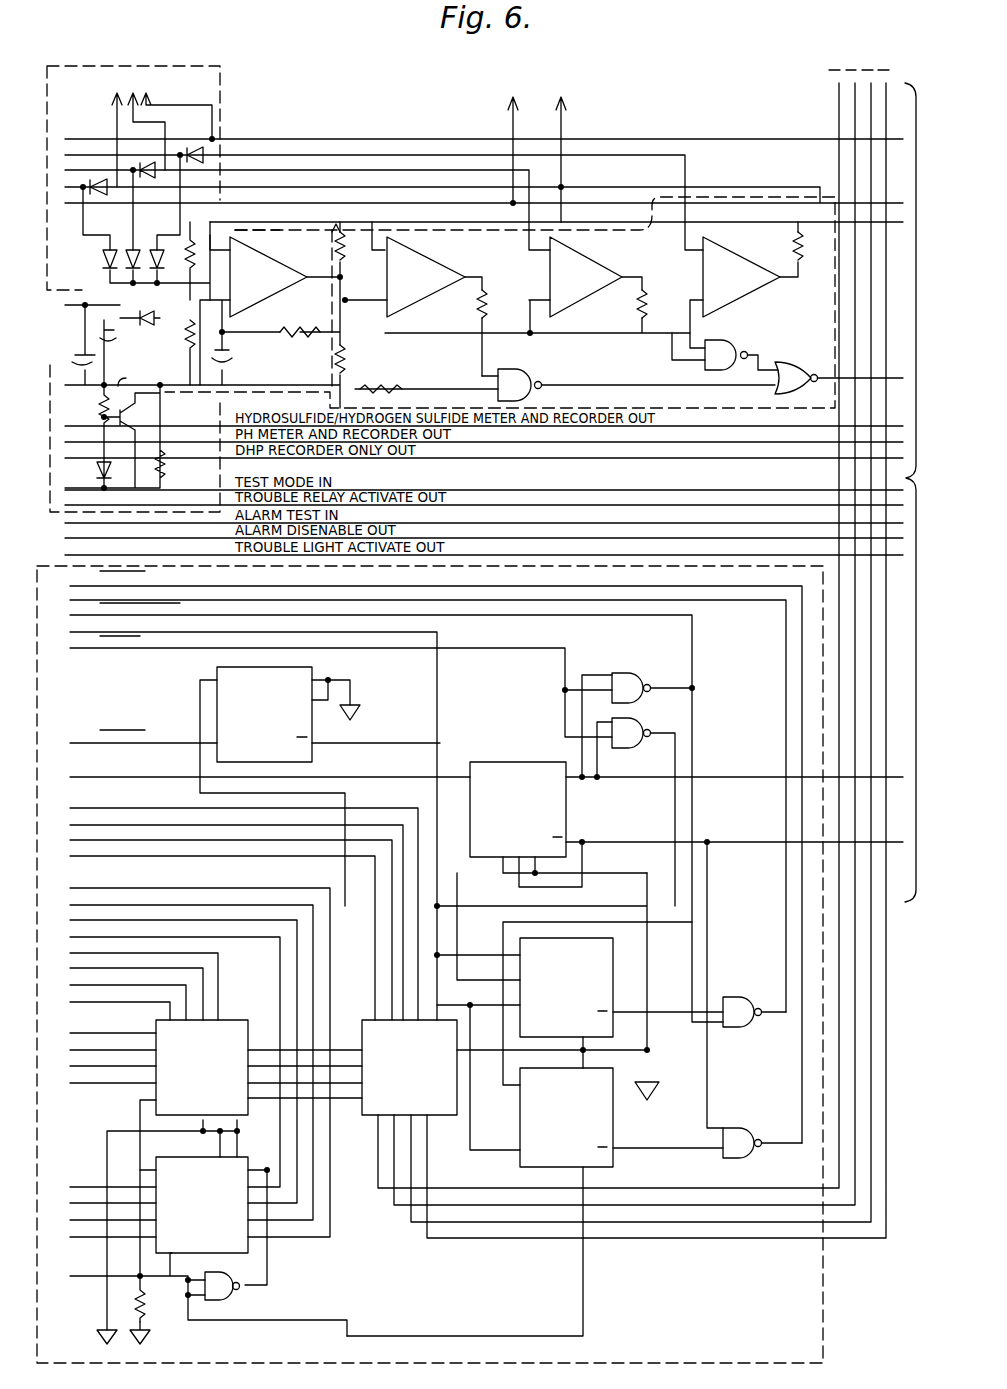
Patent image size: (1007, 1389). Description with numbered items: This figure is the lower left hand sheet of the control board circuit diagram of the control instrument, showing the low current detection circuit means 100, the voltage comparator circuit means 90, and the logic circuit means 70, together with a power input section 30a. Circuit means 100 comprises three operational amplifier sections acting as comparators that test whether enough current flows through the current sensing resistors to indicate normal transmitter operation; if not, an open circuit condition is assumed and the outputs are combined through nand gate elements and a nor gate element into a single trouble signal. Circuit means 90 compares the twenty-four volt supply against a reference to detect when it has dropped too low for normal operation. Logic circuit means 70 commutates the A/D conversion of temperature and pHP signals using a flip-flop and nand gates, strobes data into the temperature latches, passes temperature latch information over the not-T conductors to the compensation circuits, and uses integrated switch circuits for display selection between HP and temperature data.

The circuit means for low current detection 100 is at (700, 197).
The voltage comparator circuit means 90 is at (275, 398).
The input power and diode section 30a is at (50, 415).
The logic circuit means 70 is at (823, 1300).